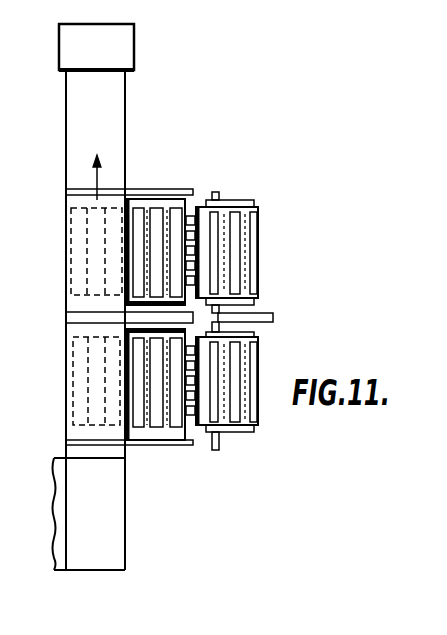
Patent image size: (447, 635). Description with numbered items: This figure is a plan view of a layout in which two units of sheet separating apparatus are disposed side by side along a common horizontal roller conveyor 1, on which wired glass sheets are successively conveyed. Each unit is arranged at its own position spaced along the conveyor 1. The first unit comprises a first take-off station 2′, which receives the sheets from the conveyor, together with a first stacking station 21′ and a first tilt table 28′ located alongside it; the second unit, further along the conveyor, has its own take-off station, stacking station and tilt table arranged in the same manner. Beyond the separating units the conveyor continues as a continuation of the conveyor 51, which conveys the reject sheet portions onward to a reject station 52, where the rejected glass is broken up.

The horizontal roller conveyor 1 is at (110, 493).
The first take-off station 2′ is at (74, 388).
The first stacking station 21′ is at (157, 408).
The first tilt table 28′ is at (234, 404).
The continuation of the conveyor 51 is at (106, 125).
The reject station 52 is at (128, 43).